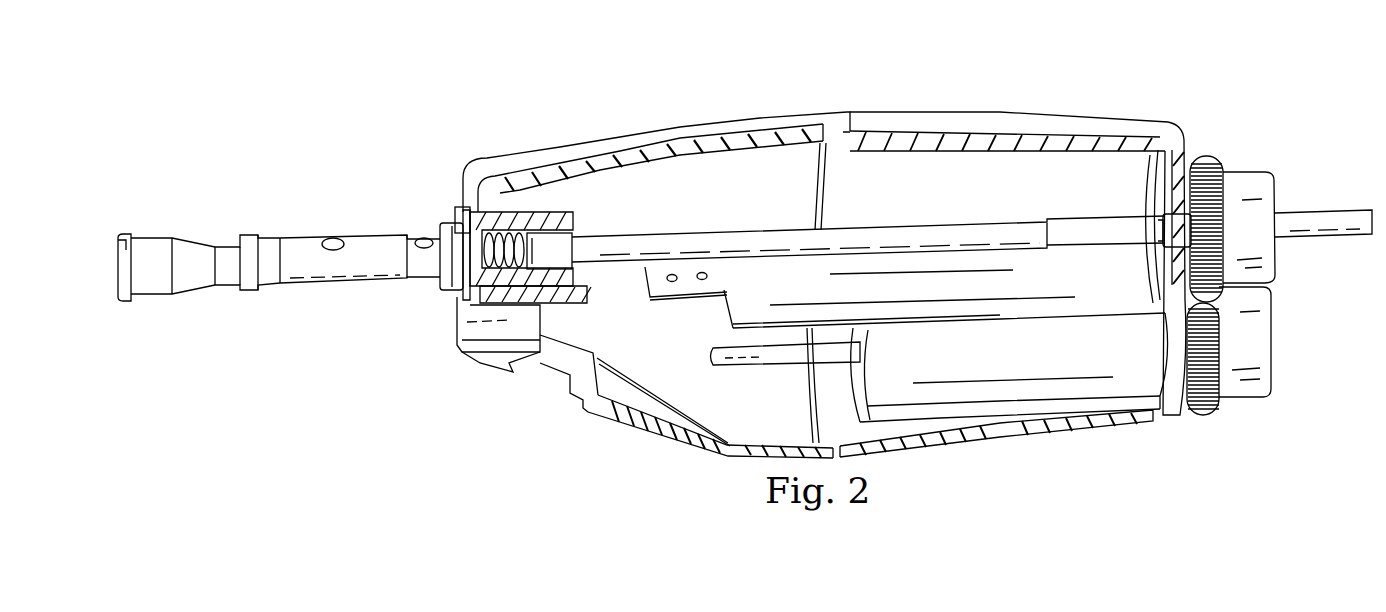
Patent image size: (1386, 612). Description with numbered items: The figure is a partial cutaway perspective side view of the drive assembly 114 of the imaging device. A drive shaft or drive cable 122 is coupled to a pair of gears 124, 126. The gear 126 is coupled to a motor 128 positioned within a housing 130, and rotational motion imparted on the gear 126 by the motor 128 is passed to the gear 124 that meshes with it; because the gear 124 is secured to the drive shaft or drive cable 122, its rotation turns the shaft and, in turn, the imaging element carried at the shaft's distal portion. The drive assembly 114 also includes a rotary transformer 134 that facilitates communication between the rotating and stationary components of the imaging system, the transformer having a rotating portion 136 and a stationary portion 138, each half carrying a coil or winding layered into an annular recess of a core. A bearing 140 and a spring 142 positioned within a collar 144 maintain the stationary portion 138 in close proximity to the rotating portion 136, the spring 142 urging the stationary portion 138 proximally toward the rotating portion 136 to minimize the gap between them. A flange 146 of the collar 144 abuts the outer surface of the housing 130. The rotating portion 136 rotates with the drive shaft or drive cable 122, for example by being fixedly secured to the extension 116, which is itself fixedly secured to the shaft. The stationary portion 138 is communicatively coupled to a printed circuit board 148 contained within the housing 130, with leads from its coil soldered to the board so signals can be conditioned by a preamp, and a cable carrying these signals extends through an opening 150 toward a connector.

The drive assembly 114 is at (700, 85).
The extension 116 is at (150, 236).
The drive shaft or drive cable 122 is at (1328, 212).
The gear 124 is at (1200, 156).
The gear 126 is at (1202, 414).
The motor 128 is at (1103, 330).
The housing 130 is at (955, 117).
The rotary transformer 134 is at (410, 216).
The rotating portion 136 is at (440, 226).
The stationary portion 138 is at (445, 262).
The bearing 140 is at (568, 241).
The spring 142 is at (527, 237).
The collar 144 is at (502, 212).
The flange 146 is at (455, 210).
The printed circuit board 148 is at (687, 300).
The opening 150 is at (462, 340).